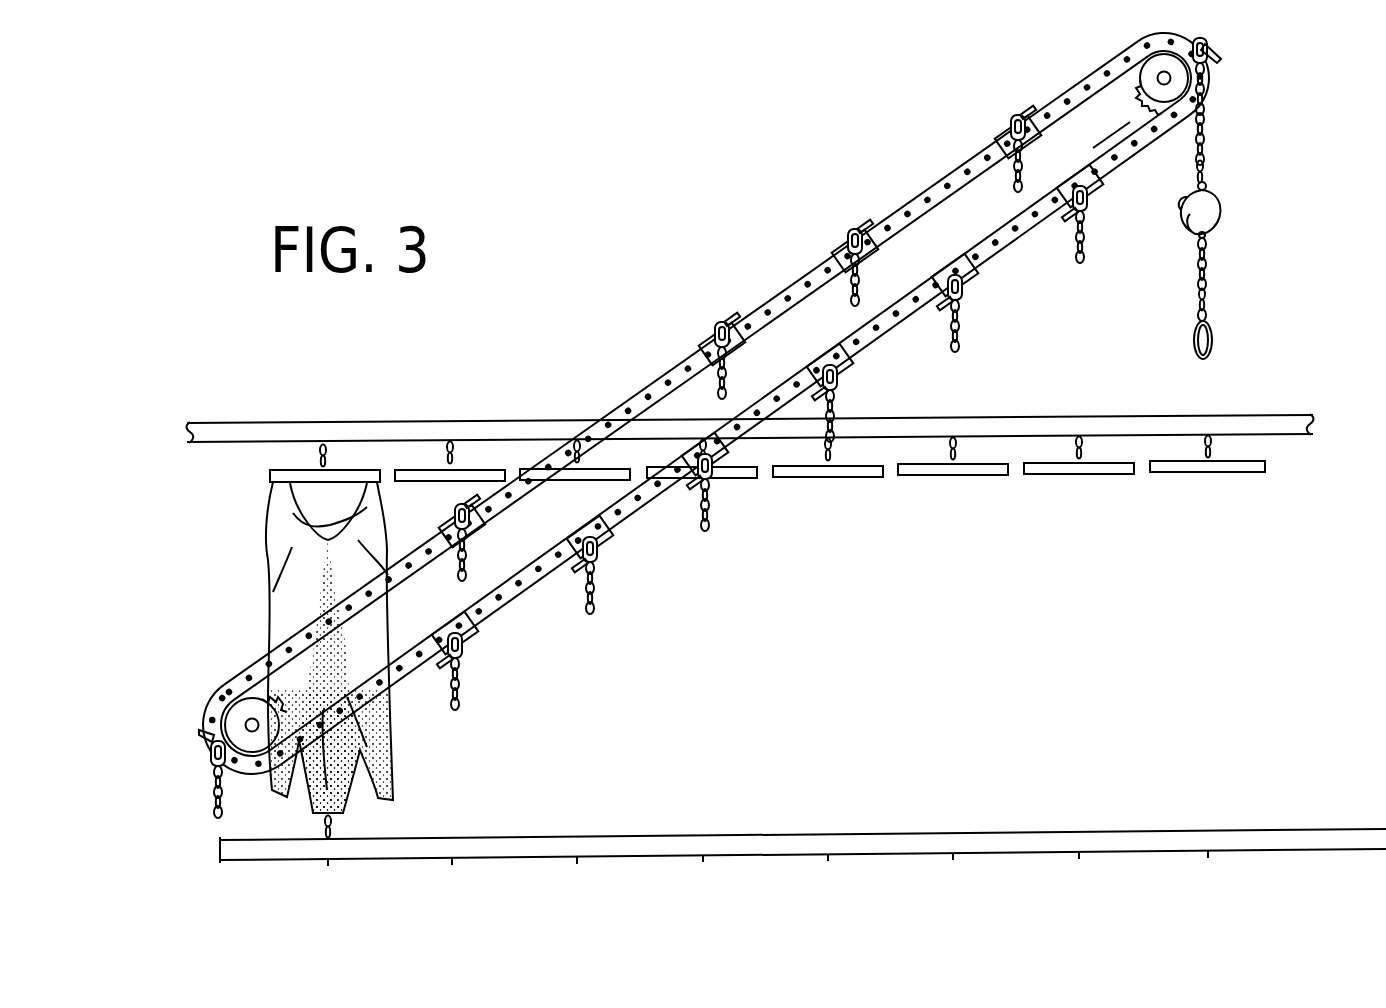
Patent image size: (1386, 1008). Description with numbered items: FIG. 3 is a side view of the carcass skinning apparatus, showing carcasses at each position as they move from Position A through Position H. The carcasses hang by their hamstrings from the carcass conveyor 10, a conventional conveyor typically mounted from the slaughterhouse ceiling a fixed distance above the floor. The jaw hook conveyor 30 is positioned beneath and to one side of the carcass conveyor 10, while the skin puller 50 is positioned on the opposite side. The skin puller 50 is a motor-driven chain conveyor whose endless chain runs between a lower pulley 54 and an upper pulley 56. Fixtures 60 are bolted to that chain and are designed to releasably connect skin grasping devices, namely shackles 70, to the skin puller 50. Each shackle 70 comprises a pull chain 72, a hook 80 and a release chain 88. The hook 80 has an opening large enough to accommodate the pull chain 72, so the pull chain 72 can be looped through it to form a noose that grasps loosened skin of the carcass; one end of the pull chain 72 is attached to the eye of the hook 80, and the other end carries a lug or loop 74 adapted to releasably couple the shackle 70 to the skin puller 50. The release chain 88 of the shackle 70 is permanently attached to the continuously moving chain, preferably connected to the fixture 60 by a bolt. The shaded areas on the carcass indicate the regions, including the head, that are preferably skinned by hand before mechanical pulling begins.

The carcass conveyor 10 is at (248, 433).
The jaw hook conveyor 30 is at (433, 848).
The skin puller 50 is at (905, 255).
The lower pulley 54 is at (245, 707).
The upper pulley 56 is at (1182, 82).
The fixture 60 is at (1210, 40).
The shackle 70 is at (1083, 266).
The pull chain 72 is at (1212, 303).
The lug or loop 74 is at (1217, 342).
The hook 80 is at (1220, 225).
The release chain 88 is at (1210, 165).